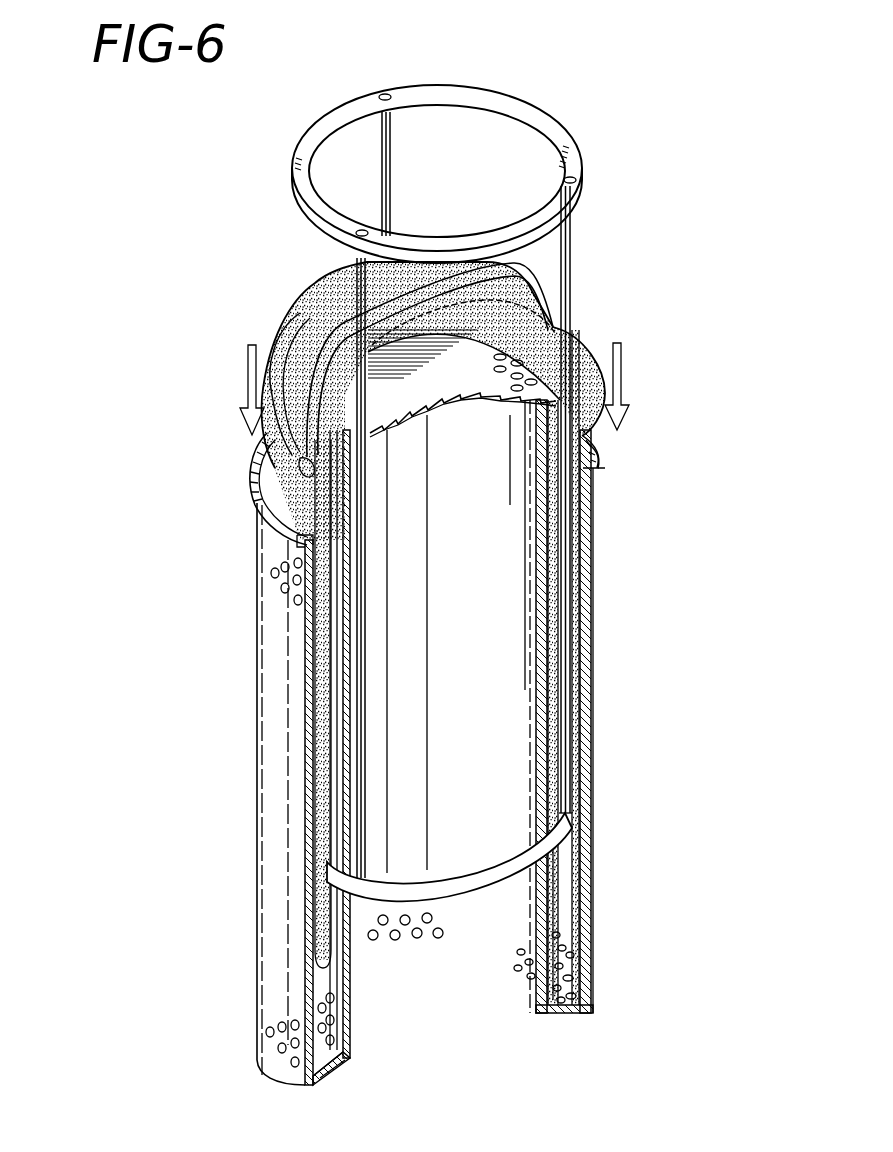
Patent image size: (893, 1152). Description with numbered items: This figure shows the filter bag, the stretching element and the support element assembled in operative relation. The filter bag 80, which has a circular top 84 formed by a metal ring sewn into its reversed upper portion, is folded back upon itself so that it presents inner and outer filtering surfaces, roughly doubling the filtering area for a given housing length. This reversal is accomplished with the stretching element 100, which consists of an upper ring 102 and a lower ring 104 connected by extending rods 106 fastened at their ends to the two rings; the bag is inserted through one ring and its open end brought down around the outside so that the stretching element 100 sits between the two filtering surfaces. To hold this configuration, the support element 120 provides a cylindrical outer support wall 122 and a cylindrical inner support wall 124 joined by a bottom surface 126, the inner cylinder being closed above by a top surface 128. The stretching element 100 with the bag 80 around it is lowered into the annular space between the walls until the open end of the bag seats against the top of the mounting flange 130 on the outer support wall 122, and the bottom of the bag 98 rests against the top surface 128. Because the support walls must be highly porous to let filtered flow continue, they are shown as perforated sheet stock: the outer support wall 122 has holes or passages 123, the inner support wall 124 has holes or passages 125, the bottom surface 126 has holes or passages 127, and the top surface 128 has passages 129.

The filter bag 80 is at (323, 300).
The circular top 84 is at (292, 402).
The bottom of the bag 98 is at (535, 283).
The stretching element 100 is at (568, 128).
The upper ring 102 is at (469, 92).
The lower ring 104 is at (487, 903).
The extending rods 106 is at (388, 142).
The support element 120 is at (258, 806).
The outer support wall 122 is at (303, 987).
The holes or passages 123 is at (294, 600).
The inner support wall 124 is at (350, 1027).
The holes or passages 125 is at (436, 940).
The bottom surface 126 is at (322, 1083).
The holes or passages 127 is at (572, 997).
The top surface 128 is at (455, 372).
The passages 129 is at (505, 357).
The mounting flange 130 is at (600, 470).